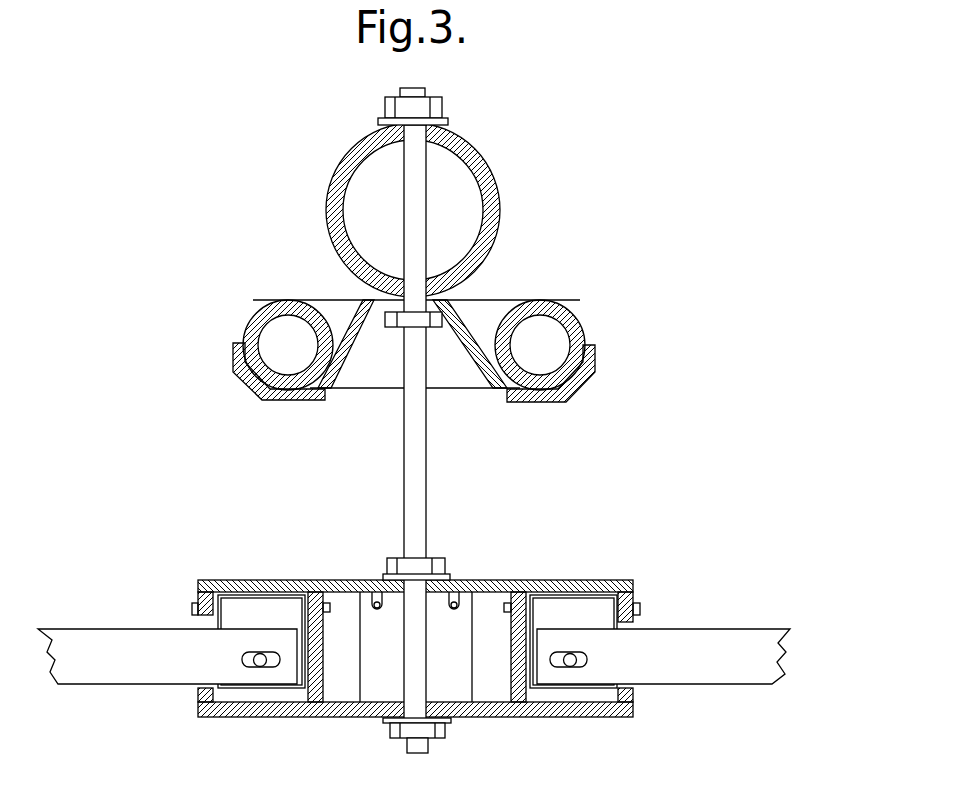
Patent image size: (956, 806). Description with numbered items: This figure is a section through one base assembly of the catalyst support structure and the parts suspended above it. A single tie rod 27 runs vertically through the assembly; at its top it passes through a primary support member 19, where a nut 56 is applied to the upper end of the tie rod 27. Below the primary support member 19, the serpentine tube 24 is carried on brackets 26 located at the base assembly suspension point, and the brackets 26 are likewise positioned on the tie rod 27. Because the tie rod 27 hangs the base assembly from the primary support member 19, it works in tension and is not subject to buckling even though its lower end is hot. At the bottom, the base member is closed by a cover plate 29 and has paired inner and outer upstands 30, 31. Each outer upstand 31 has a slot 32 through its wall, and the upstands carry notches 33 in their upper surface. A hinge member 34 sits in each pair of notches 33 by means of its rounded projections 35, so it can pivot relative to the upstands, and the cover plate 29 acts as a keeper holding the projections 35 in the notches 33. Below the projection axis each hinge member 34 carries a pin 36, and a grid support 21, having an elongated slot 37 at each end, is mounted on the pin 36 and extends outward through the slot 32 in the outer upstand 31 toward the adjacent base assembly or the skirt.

The primary support member 19 is at (488, 162).
The grid support 21 is at (107, 648).
The serpentine tube 24 is at (258, 315).
The bracket 26 is at (235, 357).
The tie rod 27 is at (417, 485).
The cover plate 29 is at (598, 581).
The inner upstand 30 is at (538, 581).
The outer upstand 31 is at (636, 600).
The slot 32 is at (197, 623).
The notch 33 is at (353, 581).
The hinge member 34 is at (268, 613).
The rounded projection 35 is at (192, 605).
The pin 36 is at (572, 670).
The elongated slot 37 is at (552, 693).
The nut 56 is at (390, 100).